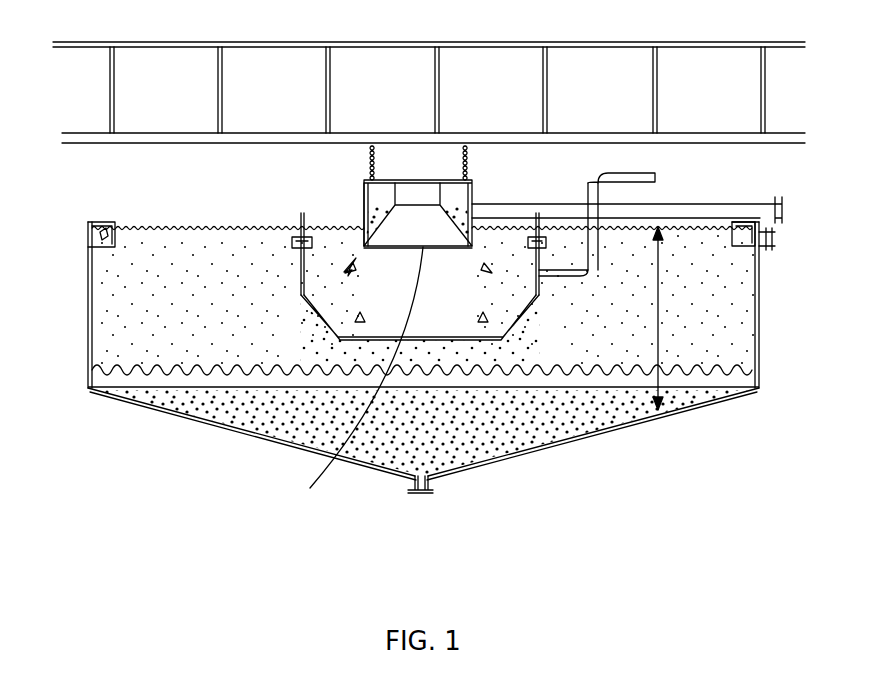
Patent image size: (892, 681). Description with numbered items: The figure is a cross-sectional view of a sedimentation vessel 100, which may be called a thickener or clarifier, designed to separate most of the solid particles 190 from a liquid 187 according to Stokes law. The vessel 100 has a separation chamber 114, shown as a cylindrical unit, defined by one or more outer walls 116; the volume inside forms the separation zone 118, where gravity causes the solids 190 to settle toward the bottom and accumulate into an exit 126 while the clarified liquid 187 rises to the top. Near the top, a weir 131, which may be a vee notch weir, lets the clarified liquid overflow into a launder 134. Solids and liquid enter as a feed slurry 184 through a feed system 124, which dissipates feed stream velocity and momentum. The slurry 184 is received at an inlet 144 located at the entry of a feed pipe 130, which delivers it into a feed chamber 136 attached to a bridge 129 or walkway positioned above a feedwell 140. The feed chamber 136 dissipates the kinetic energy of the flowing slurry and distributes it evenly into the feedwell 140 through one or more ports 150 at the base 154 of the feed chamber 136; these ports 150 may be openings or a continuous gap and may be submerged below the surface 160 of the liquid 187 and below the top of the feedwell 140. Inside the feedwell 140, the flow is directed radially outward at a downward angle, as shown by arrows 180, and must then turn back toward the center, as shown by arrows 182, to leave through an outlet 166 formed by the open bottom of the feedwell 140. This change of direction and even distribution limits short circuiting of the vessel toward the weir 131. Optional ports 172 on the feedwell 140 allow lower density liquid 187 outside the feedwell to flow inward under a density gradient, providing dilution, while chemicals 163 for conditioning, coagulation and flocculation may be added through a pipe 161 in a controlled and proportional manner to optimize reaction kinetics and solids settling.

The sedimentation vessel 100 is at (232, 442).
The separation chamber 114 is at (725, 292).
The outer walls 116 is at (88, 332).
The separation zone 118 is at (660, 305).
The feed system 124 is at (573, 193).
The exit 126 is at (430, 483).
The bridge 129 is at (260, 138).
The feed pipe 130 is at (473, 200).
The weir 131 is at (108, 222).
The launder 134 is at (105, 248).
The feed chamber 136 is at (416, 176).
The feedwell 140 is at (537, 312).
The inlet 144 is at (778, 205).
The ports 150 is at (365, 243).
The base 154 is at (310, 488).
The surface 160 is at (722, 222).
The pipe 161 is at (650, 178).
The chemicals 163 is at (524, 265).
The outlet 166 is at (410, 336).
The ports 172 is at (292, 243).
The arrows 180 is at (353, 263).
The arrows 182 is at (358, 312).
The feed slurry 184 is at (365, 212).
The liquid 187 is at (155, 226).
The solid particles 190 is at (615, 262).